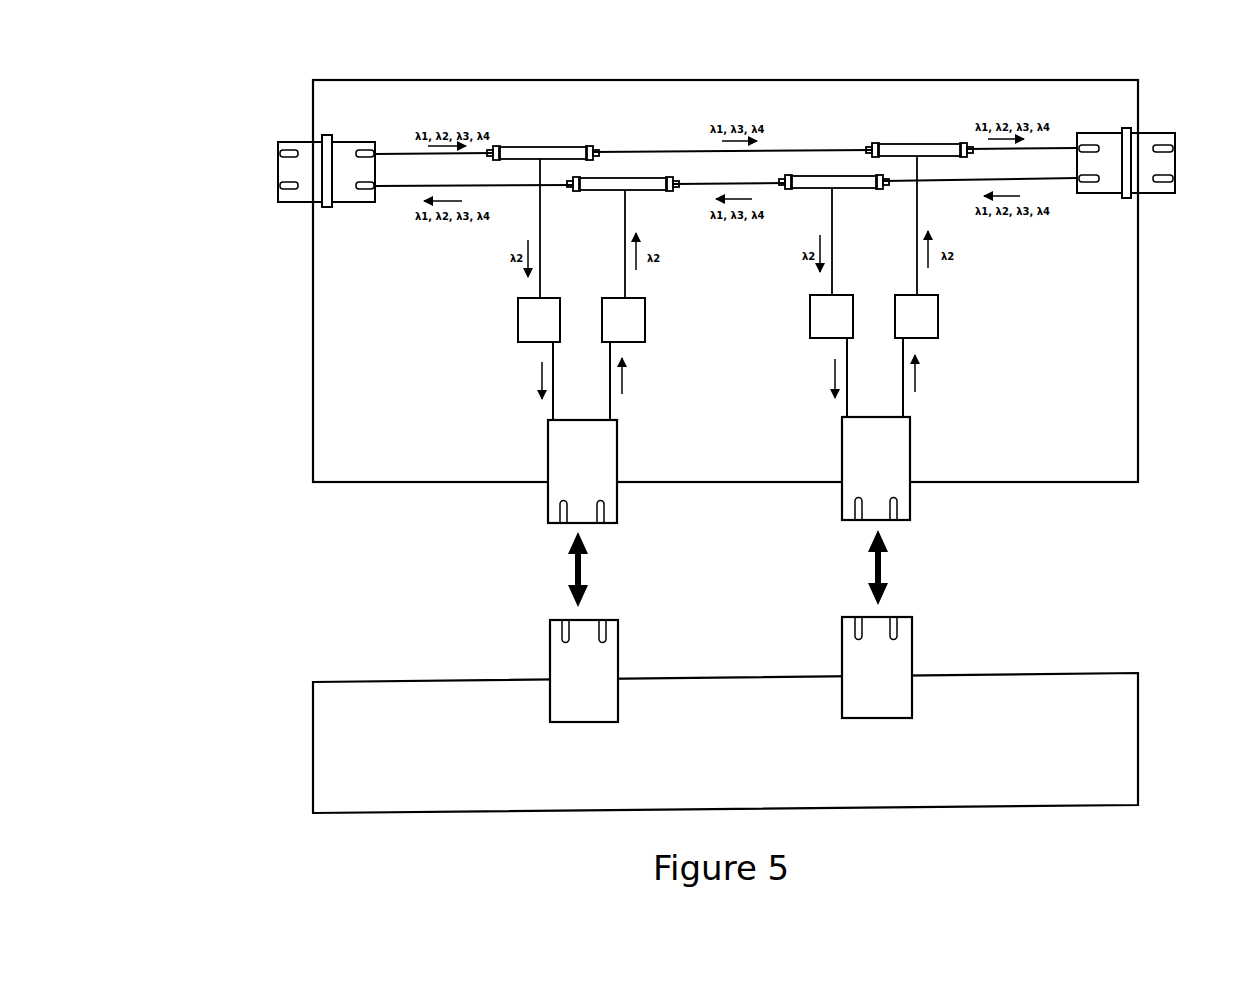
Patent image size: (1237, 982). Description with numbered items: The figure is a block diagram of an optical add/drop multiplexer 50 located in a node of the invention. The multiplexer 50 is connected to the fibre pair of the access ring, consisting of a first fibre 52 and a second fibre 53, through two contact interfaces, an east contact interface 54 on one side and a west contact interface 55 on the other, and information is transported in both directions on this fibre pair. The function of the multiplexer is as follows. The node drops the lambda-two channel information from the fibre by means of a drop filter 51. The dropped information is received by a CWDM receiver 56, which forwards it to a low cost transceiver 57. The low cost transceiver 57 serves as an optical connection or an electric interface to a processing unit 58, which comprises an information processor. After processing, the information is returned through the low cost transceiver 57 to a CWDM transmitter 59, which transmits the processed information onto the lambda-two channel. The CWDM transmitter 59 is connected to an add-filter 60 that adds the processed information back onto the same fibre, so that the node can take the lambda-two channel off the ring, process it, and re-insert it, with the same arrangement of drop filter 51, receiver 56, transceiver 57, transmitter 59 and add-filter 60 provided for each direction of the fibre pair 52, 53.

The optical add/drop multiplexer 50 is at (197, 64).
The drop filter 51 is at (535, 147).
The fibre 52 is at (398, 153).
The fibre 53 is at (398, 187).
The east contact interface 54 is at (276, 146).
The west contact interface 55 is at (1160, 135).
The CWDM receiver 56 is at (518, 318).
The low cost transceiver 57 is at (548, 447).
The processing unit 58 is at (1080, 688).
The CWDM transmitter 59 is at (645, 338).
The add-filter 60 is at (613, 193).